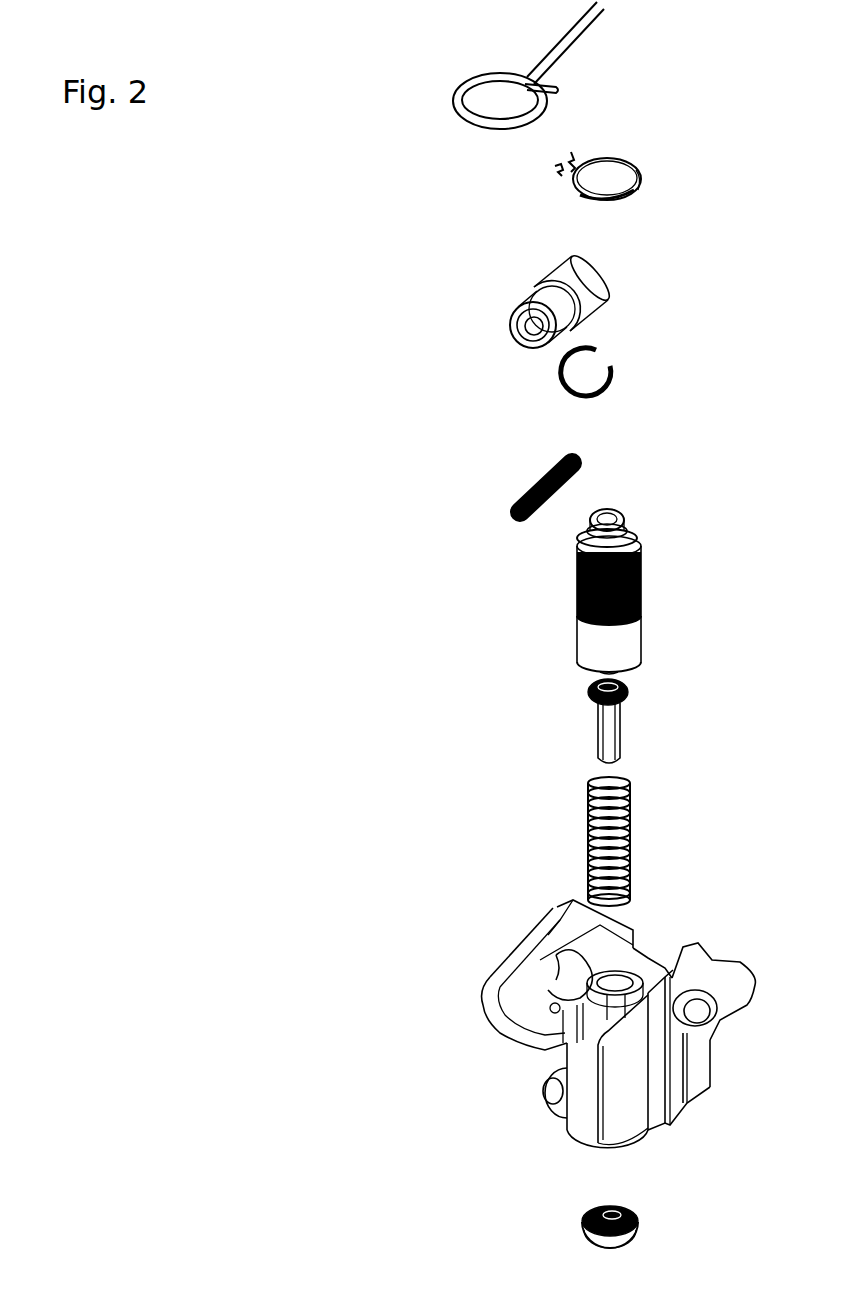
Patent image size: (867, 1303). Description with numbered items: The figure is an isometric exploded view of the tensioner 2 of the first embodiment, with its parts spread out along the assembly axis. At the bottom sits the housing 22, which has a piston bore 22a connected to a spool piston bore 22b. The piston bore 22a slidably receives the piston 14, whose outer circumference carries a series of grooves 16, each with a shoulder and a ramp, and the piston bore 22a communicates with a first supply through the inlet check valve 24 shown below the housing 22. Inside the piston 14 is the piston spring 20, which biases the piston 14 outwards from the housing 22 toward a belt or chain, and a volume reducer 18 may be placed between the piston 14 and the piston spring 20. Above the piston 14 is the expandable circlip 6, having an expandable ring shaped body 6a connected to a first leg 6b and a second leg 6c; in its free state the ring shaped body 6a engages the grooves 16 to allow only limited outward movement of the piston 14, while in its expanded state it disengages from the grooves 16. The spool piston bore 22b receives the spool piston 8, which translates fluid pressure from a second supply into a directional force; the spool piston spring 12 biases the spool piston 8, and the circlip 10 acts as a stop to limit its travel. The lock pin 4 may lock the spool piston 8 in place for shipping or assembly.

The tensioner 2 is at (218, 204).
The lock pin 4 is at (577, 33).
The expandable circlip 6 is at (603, 149).
The expandable ring shaped body 6a is at (641, 176).
The first leg 6b is at (571, 152).
The second leg 6c is at (556, 169).
The spool piston 8 is at (588, 281).
The circlip 10 is at (610, 368).
The spool piston spring 12 is at (520, 497).
The piston 14 is at (613, 512).
The grooves 16 is at (643, 573).
The volume reducer 18 is at (597, 733).
The piston spring 20 is at (590, 833).
The housing 22 is at (604, 1032).
The piston bore 22a is at (614, 983).
The spool piston bore 22b is at (556, 955).
The inlet check valve 24 is at (583, 1225).